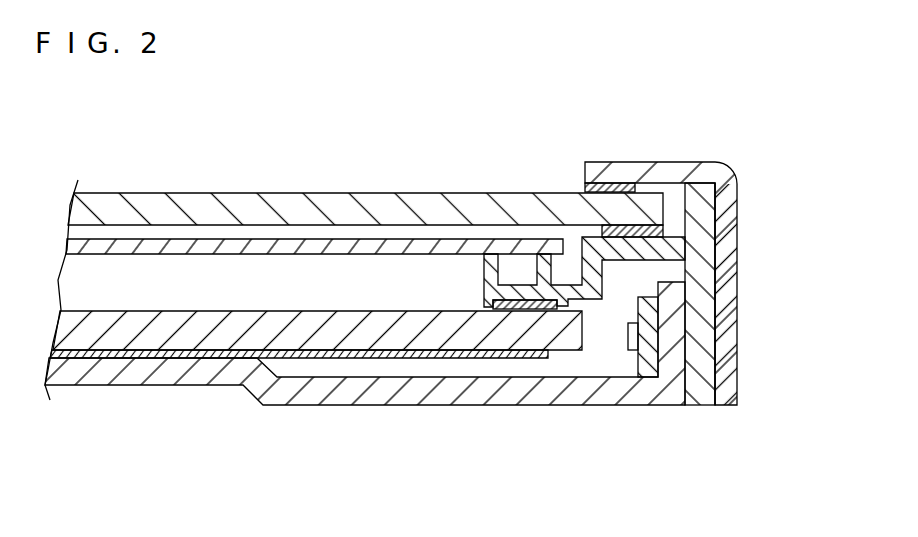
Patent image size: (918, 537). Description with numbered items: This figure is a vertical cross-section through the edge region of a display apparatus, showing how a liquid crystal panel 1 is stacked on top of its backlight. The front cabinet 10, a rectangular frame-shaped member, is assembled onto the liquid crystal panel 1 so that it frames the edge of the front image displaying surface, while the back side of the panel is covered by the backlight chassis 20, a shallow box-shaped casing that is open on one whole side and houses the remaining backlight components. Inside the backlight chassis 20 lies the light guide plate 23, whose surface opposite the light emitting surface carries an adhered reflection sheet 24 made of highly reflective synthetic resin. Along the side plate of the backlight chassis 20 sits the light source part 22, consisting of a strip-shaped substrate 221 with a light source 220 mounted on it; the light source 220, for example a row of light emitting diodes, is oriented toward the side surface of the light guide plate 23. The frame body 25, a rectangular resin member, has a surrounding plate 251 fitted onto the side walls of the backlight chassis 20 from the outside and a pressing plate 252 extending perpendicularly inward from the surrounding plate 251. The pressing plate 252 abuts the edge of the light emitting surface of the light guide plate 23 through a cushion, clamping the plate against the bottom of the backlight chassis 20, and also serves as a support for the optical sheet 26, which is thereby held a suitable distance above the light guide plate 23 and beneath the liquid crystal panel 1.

The liquid crystal panel 1 is at (423, 200).
The front cabinet 10 is at (673, 162).
The backlight chassis 20 is at (472, 397).
The light source part 22 is at (589, 412).
The light source 220 is at (628, 348).
The substrate 221 is at (640, 368).
The light guide plate 23 is at (357, 337).
The reflection sheet 24 is at (427, 356).
The frame body 25 is at (687, 294).
The surrounding plate 251 is at (830, 226).
The pressing plate 252 is at (653, 256).
The optical sheet 26 is at (303, 243).